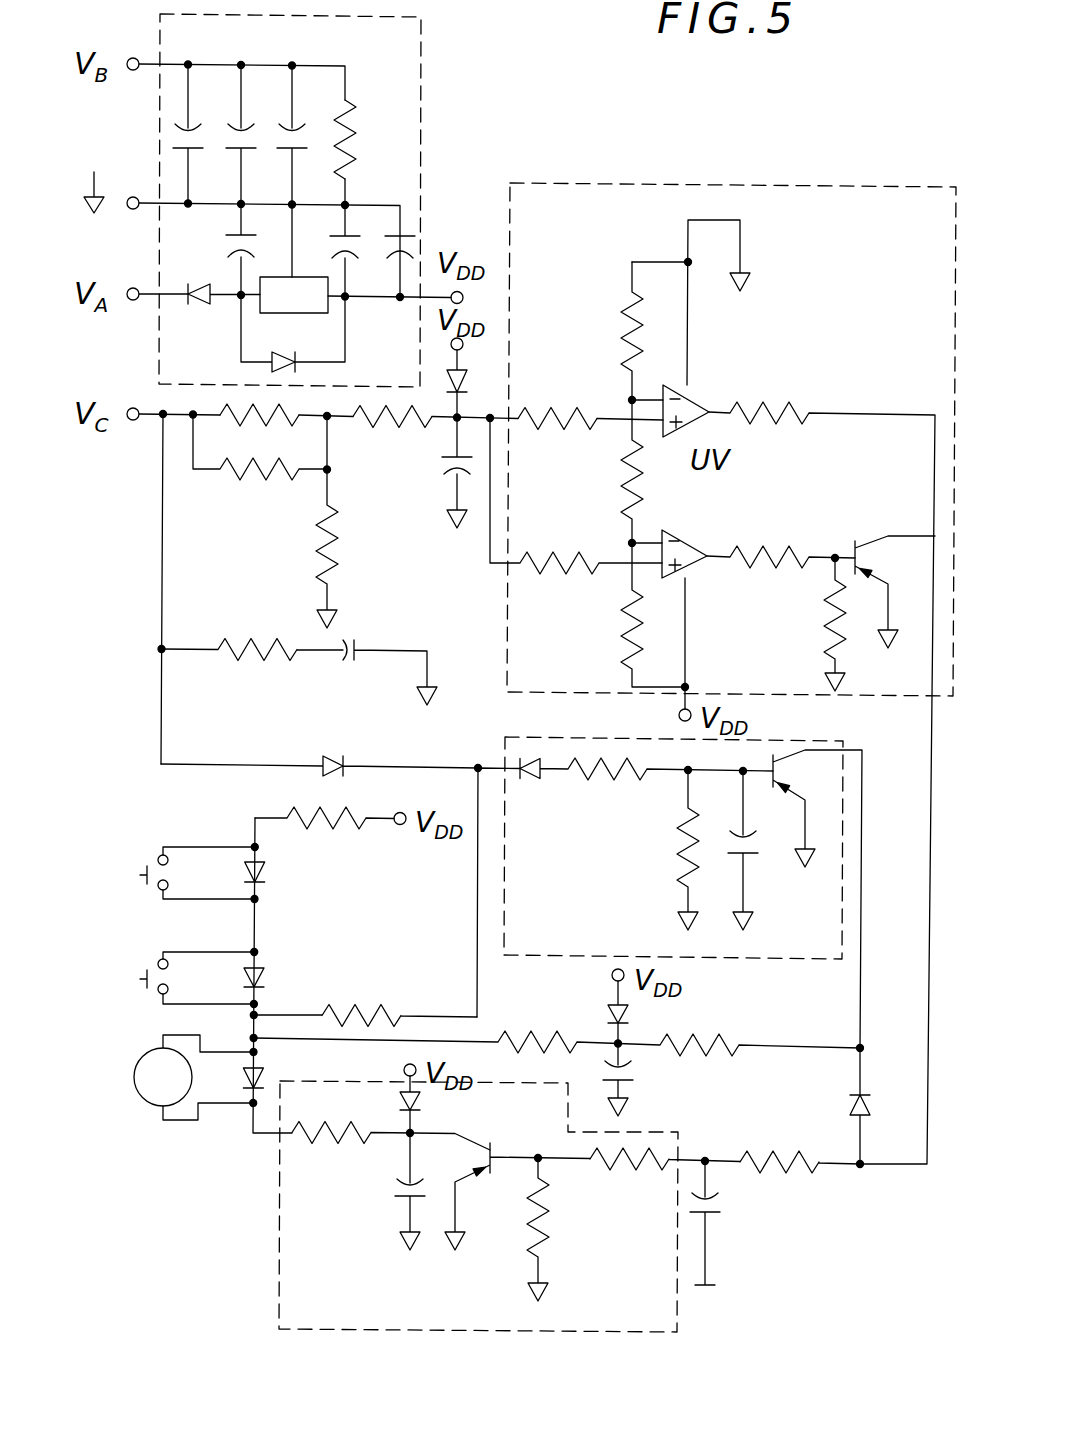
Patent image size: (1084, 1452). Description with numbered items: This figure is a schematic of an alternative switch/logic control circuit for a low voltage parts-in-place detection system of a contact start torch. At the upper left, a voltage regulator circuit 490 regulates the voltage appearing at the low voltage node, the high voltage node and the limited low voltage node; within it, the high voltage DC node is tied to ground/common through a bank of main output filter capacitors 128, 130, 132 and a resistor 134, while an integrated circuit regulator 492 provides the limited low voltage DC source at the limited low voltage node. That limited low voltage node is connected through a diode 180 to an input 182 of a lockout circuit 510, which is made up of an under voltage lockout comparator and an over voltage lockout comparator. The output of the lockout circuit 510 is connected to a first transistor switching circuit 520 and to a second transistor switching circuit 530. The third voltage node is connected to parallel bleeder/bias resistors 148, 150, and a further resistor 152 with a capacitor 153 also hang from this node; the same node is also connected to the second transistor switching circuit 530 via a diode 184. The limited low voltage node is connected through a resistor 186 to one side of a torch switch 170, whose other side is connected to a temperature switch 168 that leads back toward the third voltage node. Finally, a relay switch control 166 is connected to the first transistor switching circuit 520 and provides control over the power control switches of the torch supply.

The main output filter capacitor 128 is at (197, 128).
The main output filter capacitor 130 is at (252, 128).
The main output filter capacitor 132 is at (302, 128).
The resistor 134 is at (373, 139).
The voltage regulator circuit 490 is at (380, 15).
The integrated circuit regulator 492 is at (330, 314).
The diode 180 is at (466, 378).
The input of lockout circuit 182 is at (492, 421).
The bleeder/bias resistor 148 is at (280, 417).
The bleeder/bias resistor 150 is at (290, 478).
The resistor 152 is at (290, 645).
The capacitor 153 is at (350, 640).
The diode 184 is at (355, 726).
The lockout circuit 510 is at (900, 187).
The second transistor switching circuit 530 is at (548, 738).
The torch switch 170 is at (148, 866).
The temperature switch 168 is at (148, 970).
The switch K1 control 166 is at (148, 1052).
The resistor 186 is at (366, 822).
The first transistor switching circuit 520 is at (280, 1168).